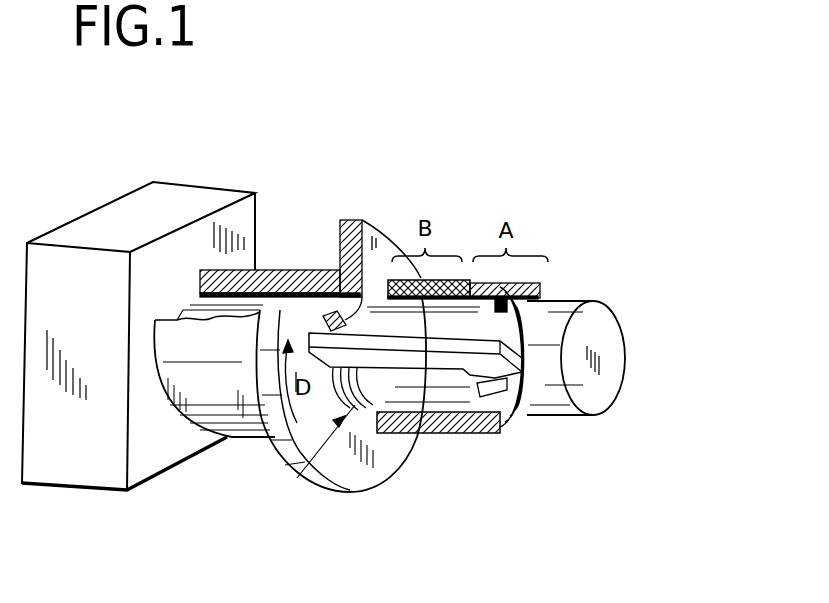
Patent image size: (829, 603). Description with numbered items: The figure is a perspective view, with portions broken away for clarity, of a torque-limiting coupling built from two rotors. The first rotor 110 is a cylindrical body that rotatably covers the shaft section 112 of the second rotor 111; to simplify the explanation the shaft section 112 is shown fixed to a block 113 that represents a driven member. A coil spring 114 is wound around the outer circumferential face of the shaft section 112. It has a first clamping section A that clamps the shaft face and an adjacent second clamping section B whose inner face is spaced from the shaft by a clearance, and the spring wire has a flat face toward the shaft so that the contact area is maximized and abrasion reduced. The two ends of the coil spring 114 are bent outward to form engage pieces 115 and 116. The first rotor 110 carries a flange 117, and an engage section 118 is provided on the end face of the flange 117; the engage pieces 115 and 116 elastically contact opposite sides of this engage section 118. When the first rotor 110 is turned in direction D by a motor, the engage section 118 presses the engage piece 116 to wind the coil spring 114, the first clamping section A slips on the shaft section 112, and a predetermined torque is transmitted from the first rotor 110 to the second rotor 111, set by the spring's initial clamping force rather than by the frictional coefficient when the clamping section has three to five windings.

The first rotor 110 is at (225, 413).
The second rotor 111 is at (275, 223).
The shaft section 112 is at (617, 347).
The driven member 113 is at (67, 473).
The coil spring 114 is at (447, 437).
The engage piece 115 is at (490, 377).
The engage piece 116 is at (367, 228).
The flange 117 is at (373, 478).
The engage section 118 is at (297, 478).